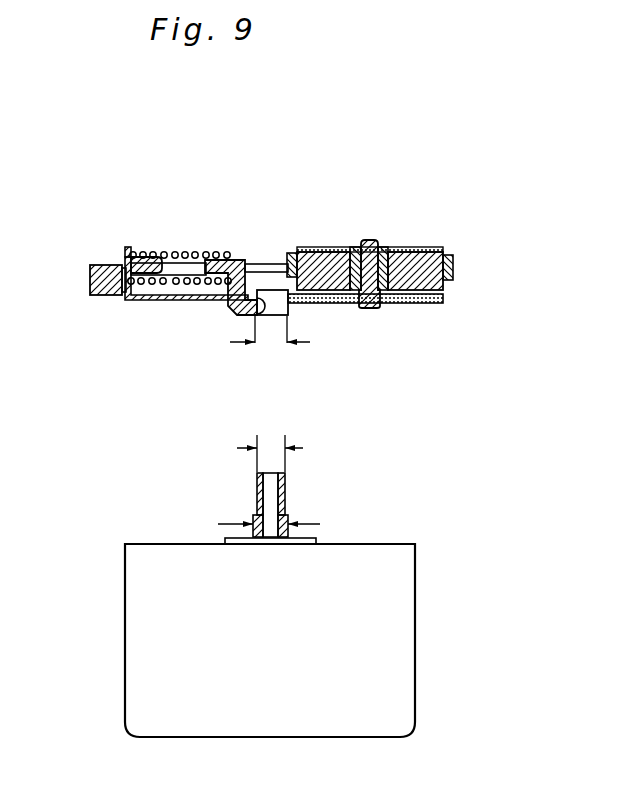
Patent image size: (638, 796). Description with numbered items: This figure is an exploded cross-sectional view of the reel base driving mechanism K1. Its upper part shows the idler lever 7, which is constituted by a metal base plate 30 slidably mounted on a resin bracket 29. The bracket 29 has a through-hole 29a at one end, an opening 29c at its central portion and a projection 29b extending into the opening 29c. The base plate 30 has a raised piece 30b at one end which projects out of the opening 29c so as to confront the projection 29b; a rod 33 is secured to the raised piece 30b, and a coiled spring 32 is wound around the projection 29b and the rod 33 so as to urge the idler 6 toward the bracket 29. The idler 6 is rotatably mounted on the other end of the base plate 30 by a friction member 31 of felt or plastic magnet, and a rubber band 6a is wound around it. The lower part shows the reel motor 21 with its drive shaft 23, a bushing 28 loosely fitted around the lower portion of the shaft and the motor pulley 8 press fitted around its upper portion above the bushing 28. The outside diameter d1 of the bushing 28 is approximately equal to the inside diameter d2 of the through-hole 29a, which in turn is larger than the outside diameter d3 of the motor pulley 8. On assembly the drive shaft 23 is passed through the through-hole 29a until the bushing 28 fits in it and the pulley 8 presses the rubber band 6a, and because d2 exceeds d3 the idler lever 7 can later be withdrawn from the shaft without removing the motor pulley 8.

The reel base driving mechanism K1 is at (340, 209).
The idler lever 7 is at (88, 253).
The bracket 29 is at (98, 296).
The through-hole 29a is at (262, 313).
The projection 29b is at (230, 260).
The opening 29c is at (173, 288).
The base plate 30 is at (157, 301).
The raised piece 30b is at (127, 247).
The coiled spring 32 is at (175, 255).
The rod 33 is at (148, 256).
The idler 6 is at (426, 258).
The rubber band 6a is at (455, 265).
The friction member 31 is at (444, 298).
The inside diameter of the through-hole d2 is at (270, 342).
The reel motor 21 is at (402, 632).
The motor pulley 8 is at (257, 487).
The drive shaft 23 is at (273, 482).
The bushing 28 is at (253, 517).
The outside diameter of the bushing d1 is at (284, 524).
The outside diameter of the motor pulley d3 is at (270, 451).